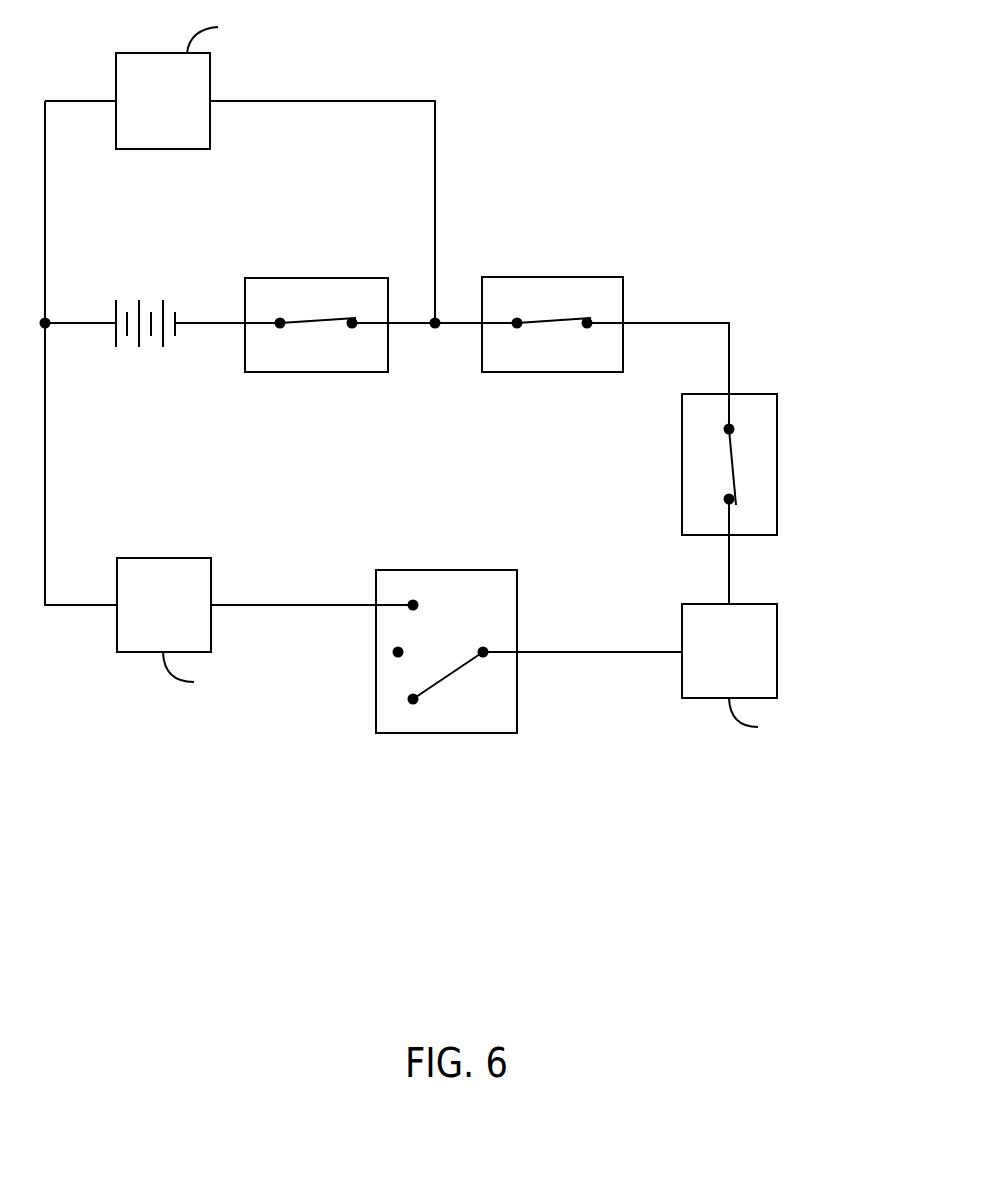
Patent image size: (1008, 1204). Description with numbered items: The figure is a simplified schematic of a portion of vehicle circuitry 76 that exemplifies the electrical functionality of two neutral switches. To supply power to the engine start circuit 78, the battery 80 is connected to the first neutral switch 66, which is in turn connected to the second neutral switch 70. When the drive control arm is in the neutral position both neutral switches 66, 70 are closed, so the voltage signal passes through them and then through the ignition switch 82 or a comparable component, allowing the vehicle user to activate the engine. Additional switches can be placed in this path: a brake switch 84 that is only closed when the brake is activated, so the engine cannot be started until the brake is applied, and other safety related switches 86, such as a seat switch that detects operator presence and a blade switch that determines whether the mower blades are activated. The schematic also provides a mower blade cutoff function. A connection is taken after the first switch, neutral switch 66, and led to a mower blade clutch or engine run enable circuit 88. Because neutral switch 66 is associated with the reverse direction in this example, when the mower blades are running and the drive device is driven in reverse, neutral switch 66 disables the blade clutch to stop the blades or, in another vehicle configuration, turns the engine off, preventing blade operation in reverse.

The vehicle circuitry 76 is at (760, 257).
The mower blade clutch or engine run enable circuit 88 is at (163, 53).
The battery 80 is at (116, 313).
The neutral switch 66 is at (316, 278).
The neutral switch 70 is at (553, 277).
The brake switch 84 is at (777, 465).
The safety related switches 86 is at (777, 652).
The engine start circuit 78 is at (163, 558).
The ignition switch 82 is at (447, 733).